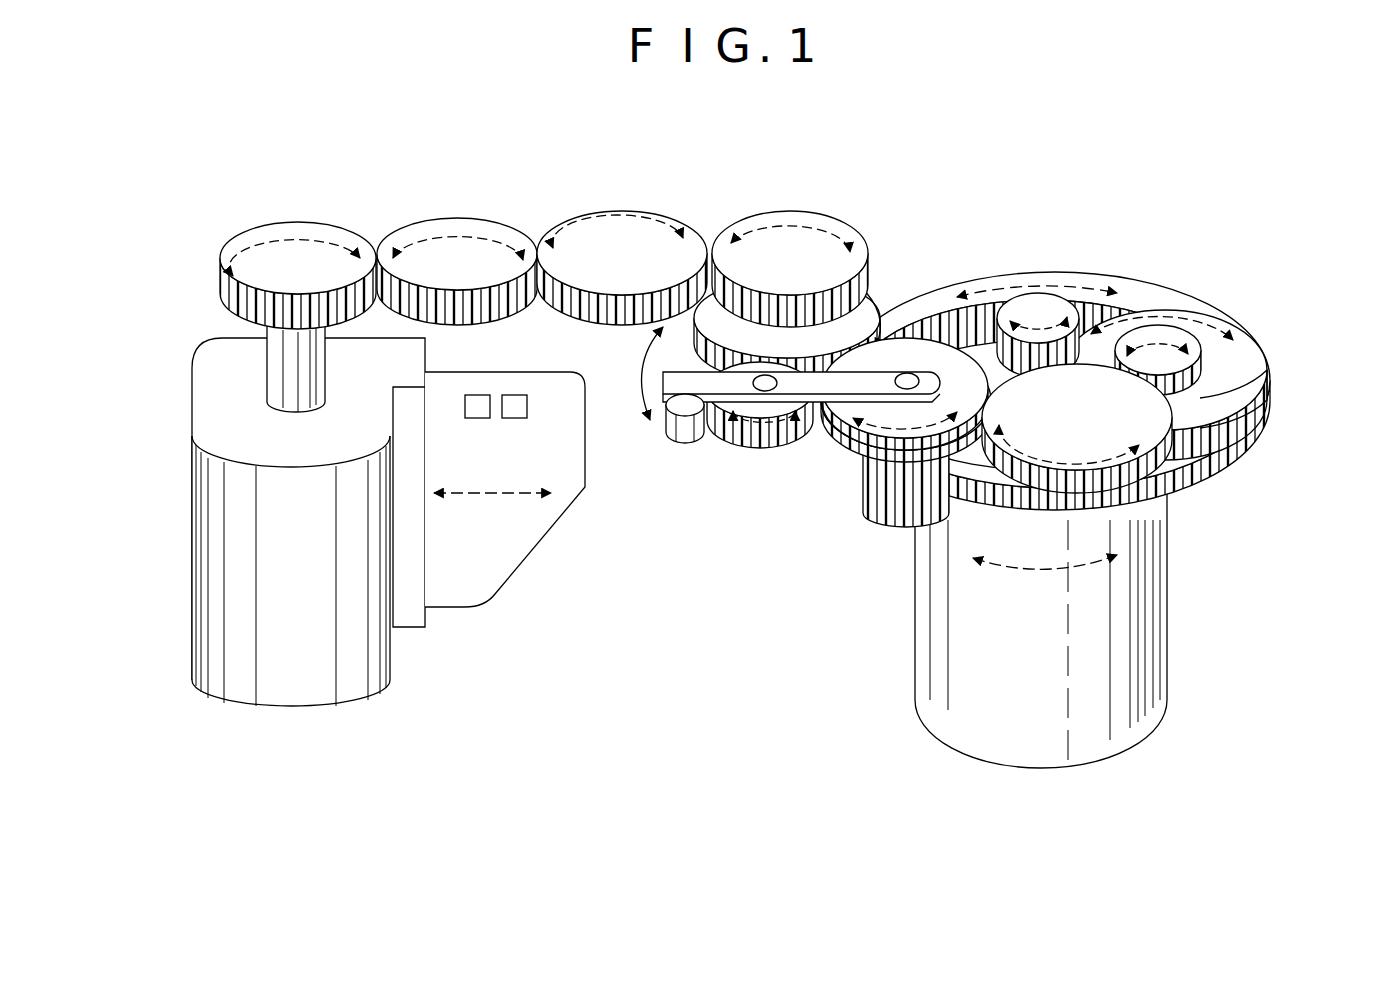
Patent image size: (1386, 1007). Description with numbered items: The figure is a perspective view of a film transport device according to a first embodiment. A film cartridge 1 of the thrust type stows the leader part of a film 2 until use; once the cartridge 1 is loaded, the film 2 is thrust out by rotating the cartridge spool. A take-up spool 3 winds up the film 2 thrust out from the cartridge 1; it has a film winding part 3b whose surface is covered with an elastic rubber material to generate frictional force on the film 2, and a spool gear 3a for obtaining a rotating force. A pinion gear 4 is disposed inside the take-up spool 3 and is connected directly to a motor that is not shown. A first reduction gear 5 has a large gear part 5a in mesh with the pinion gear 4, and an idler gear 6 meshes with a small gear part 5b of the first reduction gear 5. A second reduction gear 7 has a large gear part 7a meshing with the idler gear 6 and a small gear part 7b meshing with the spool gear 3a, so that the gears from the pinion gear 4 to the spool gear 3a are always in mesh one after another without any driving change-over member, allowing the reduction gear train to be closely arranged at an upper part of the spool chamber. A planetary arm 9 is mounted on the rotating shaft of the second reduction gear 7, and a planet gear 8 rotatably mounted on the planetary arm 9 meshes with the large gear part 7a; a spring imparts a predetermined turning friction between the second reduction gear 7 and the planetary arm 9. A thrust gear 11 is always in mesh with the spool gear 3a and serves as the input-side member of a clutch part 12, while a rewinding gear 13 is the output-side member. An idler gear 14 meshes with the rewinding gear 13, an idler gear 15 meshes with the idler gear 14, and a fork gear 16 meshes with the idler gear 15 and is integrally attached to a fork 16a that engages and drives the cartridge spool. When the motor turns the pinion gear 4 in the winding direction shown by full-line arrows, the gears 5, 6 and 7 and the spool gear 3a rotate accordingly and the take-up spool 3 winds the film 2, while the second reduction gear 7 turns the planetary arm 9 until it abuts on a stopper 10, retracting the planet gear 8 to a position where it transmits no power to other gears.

The film cartridge 1 is at (276, 690).
The film 2 is at (475, 597).
The take-up spool 3 is at (968, 730).
The spool gear 3a is at (982, 500).
The film winding part 3b is at (1155, 640).
The pinion gear 4 is at (1040, 316).
The first reduction gear 5 is at (1245, 365).
The large gear part 5a is at (1280, 400).
The small gear part 5b is at (1158, 350).
The idler gear 6 is at (1147, 413).
The second reduction gear 7 is at (827, 438).
The large gear part 7a is at (853, 450).
The small gear part 7b is at (897, 503).
The planet gear 8 is at (752, 445).
The planetary arm 9 is at (860, 347).
The stopper 10 is at (676, 420).
The thrust gear 11 is at (878, 380).
The clutch part 12 is at (730, 325).
The rewinding gear 13 is at (788, 240).
The idler gear 14 is at (618, 228).
The idler gear 15 is at (462, 240).
The fork gear 16 is at (290, 245).
The fork 16a is at (282, 345).